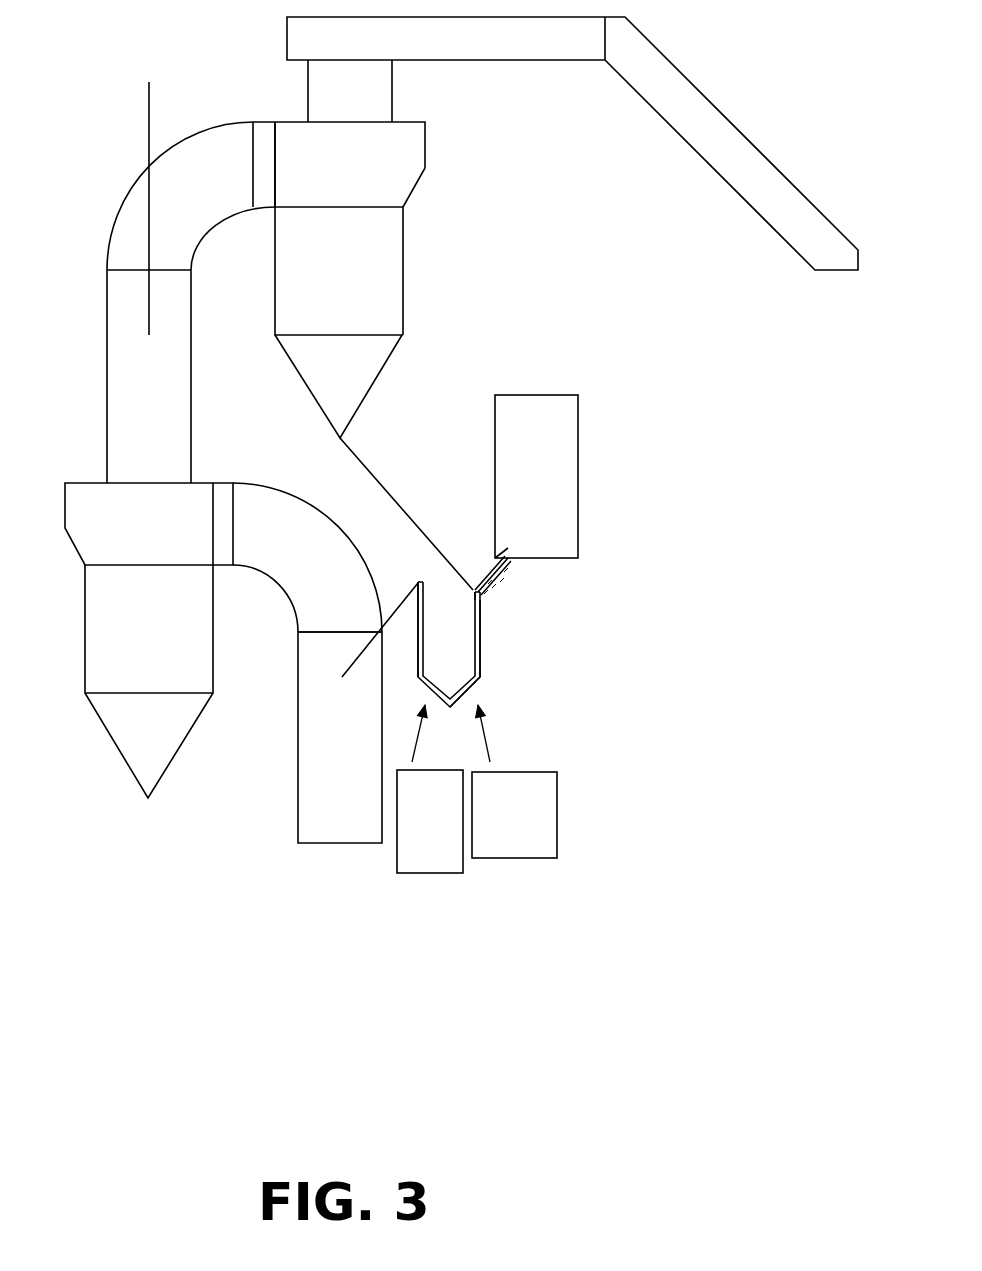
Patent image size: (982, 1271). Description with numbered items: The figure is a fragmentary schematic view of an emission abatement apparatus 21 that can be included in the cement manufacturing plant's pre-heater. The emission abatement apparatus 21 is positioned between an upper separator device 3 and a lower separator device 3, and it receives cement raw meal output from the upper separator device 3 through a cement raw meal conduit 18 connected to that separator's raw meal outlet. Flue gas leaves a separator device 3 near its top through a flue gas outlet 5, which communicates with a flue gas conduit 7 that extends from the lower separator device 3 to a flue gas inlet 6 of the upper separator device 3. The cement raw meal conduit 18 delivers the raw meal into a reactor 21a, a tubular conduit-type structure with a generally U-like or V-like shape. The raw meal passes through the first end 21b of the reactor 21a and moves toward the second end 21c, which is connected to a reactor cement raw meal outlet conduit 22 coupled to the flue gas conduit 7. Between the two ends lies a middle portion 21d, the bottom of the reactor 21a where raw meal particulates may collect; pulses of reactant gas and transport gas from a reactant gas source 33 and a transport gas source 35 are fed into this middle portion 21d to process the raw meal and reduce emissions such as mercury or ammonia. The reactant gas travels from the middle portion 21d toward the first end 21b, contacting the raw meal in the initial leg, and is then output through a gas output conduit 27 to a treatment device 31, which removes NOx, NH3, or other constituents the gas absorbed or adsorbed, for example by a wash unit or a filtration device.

The separator device 3 is at (335, 340).
The flue gas outlet 5 is at (143, 487).
The flue gas inlet 6 is at (213, 513).
The flue gas conduit 7 is at (240, 958).
The cement raw meal conduit 18 is at (385, 487).
The emission abatement apparatus 21 is at (497, 660).
The reactor 21a is at (497, 632).
The first end 21b is at (475, 592).
The second end 21c is at (418, 582).
The middle portion 21d is at (512, 720).
The reactor cement raw meal outlet conduit 22 is at (397, 605).
The gas output conduit 27 is at (497, 567).
The treatment device 31 is at (536, 476).
The reactant gas source 33 is at (514, 781).
The transport gas source 35 is at (430, 789).